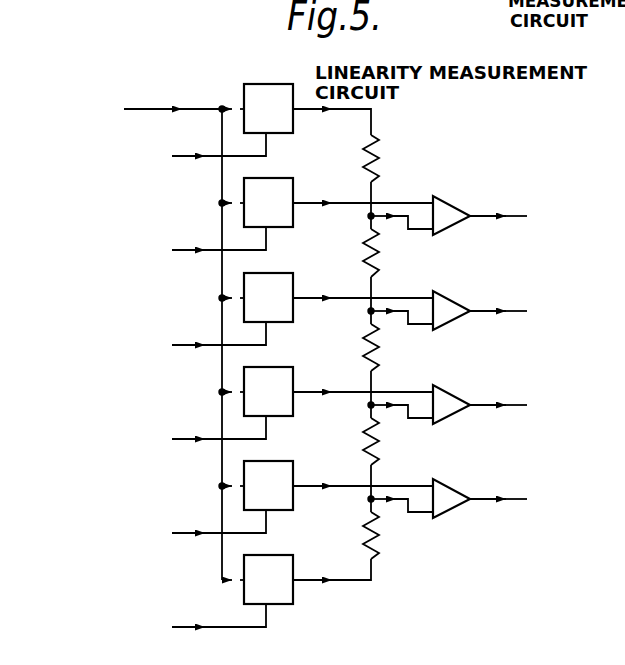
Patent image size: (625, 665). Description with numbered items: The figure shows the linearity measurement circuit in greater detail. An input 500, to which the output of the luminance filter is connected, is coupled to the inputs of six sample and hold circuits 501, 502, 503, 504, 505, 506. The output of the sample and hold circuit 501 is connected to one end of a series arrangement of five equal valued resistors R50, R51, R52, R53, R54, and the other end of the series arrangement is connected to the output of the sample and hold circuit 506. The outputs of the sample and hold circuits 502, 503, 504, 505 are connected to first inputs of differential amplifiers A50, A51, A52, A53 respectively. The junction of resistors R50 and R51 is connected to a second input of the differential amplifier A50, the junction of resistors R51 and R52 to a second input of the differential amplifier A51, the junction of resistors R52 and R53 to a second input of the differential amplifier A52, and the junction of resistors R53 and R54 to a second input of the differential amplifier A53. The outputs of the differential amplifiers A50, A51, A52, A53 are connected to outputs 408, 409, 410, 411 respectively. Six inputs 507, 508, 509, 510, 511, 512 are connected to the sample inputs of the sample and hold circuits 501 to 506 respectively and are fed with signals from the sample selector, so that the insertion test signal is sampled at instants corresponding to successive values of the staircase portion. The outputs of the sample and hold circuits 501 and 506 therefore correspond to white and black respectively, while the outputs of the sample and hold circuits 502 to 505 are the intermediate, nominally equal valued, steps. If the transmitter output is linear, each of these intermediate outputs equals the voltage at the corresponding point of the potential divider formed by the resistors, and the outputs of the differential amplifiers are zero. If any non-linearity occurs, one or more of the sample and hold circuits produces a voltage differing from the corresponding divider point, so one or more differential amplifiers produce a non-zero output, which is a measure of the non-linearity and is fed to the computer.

The input 500 is at (154, 109).
The sample and hold circuit 501 is at (265, 93).
The sample and hold circuit 502 is at (270, 182).
The sample and hold circuit 503 is at (270, 277).
The sample and hold circuit 504 is at (270, 371).
The sample and hold circuit 505 is at (270, 465).
The sample and hold circuit 506 is at (270, 559).
The input 507 is at (200, 151).
The input 508 is at (200, 245).
The input 509 is at (200, 340).
The input 510 is at (200, 434).
The input 511 is at (200, 528).
The input 512 is at (200, 622).
The resistor R50 is at (379, 147).
The resistor R51 is at (379, 241).
The resistor R52 is at (379, 336).
The resistor R53 is at (379, 430).
The resistor R54 is at (379, 524).
The differential amplifier A50 is at (452, 211).
The differential amplifier A51 is at (452, 306).
The differential amplifier A52 is at (452, 400).
The differential amplifier A53 is at (452, 494).
The output 408 is at (517, 216).
The output 409 is at (517, 311).
The output 410 is at (517, 405).
The output 411 is at (517, 499).